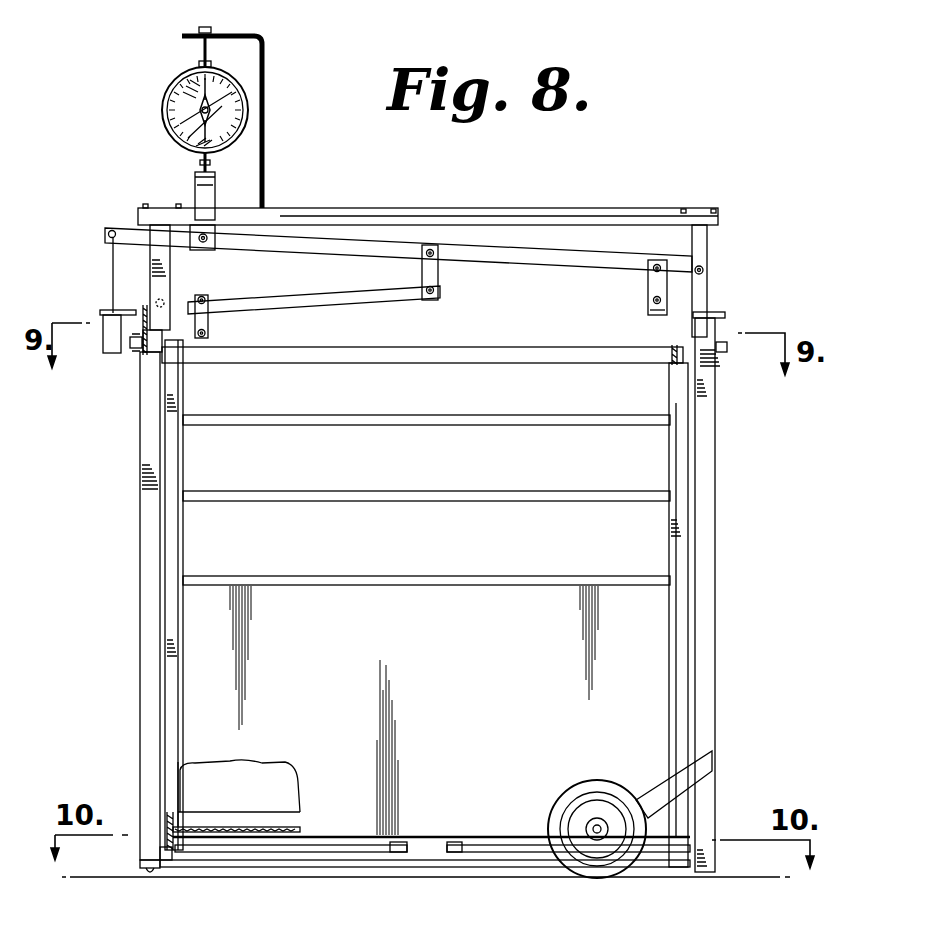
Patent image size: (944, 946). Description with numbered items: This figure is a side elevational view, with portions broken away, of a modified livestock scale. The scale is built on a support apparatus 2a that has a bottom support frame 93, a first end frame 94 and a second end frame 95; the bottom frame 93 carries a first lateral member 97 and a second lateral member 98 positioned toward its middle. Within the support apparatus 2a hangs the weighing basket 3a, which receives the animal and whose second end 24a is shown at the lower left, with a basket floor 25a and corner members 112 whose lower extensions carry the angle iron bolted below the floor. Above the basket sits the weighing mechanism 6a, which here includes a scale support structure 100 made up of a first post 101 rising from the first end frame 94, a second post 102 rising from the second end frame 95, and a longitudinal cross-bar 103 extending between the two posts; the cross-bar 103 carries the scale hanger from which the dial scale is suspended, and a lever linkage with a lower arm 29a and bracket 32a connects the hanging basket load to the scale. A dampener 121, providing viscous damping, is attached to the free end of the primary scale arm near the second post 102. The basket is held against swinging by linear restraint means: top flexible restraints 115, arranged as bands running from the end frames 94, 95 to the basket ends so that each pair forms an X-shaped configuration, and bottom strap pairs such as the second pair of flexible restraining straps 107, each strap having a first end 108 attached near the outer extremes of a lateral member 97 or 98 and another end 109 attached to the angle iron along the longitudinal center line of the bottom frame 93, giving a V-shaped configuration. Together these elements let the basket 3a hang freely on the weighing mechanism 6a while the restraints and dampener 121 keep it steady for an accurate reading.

The scale support structure 100 is at (713, 252).
The longitudinal cross-bar 103 is at (432, 217).
The second post 102 is at (170, 290).
The weighing mechanism 6a is at (455, 295).
The lower lever arm 29a is at (368, 297).
The lever bracket 32a is at (208, 318).
The first post 101 is at (705, 300).
The dampener 121 is at (115, 355).
The top flexible restraints 115 is at (186, 368).
The second end frame 95 is at (142, 695).
The support apparatus 2a is at (728, 460).
The weighing basket 3a is at (660, 715).
The first end frame 94 is at (707, 590).
The bottom support frame 93 is at (665, 860).
The second pair of flexible restraining straps 107 is at (350, 822).
The strap first end 108 is at (468, 843).
The second lateral member 98 is at (397, 852).
The first lateral member 97 is at (452, 852).
The strap other end 109 is at (177, 858).
The corner members 112 is at (178, 778).
The weighing basket second end 24a is at (273, 820).
The basket floor 25a is at (297, 805).